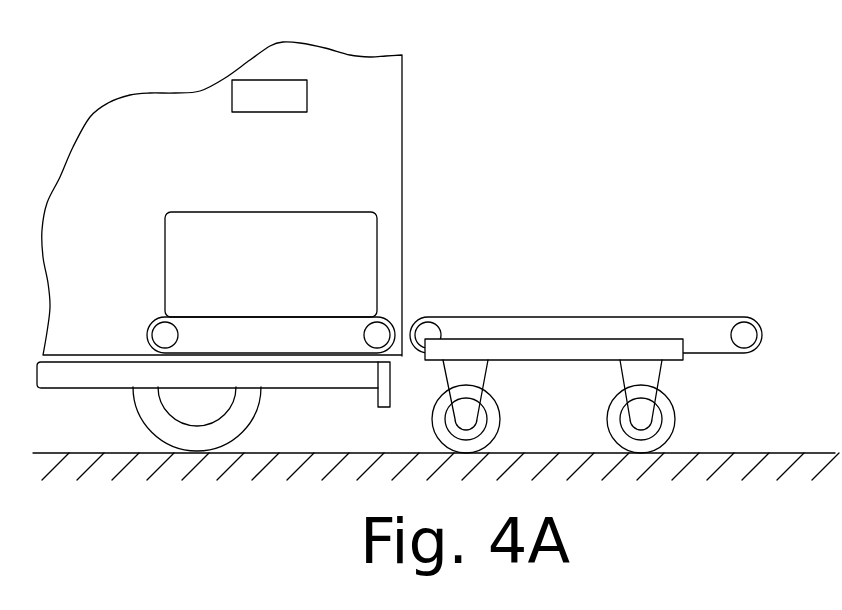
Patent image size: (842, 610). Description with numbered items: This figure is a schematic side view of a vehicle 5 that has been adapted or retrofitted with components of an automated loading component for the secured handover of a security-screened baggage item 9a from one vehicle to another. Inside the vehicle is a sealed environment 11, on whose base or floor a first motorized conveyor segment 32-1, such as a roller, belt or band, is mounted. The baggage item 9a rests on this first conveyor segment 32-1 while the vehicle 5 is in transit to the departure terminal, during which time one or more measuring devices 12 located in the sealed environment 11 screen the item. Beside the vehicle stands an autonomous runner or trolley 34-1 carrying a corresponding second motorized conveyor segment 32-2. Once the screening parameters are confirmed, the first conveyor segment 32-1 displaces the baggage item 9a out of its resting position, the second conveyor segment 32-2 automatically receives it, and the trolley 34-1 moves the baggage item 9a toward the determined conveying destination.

The vehicle 5 is at (402, 93).
The sealed environment 11 is at (173, 164).
The measuring devices 12 is at (269, 96).
The baggage item 9a is at (330, 212).
The first motorized conveyor segment 32-1 is at (162, 317).
The second motorized conveyor segment 32-2 is at (710, 317).
The autonomous runner or trolley 34-1 is at (662, 373).